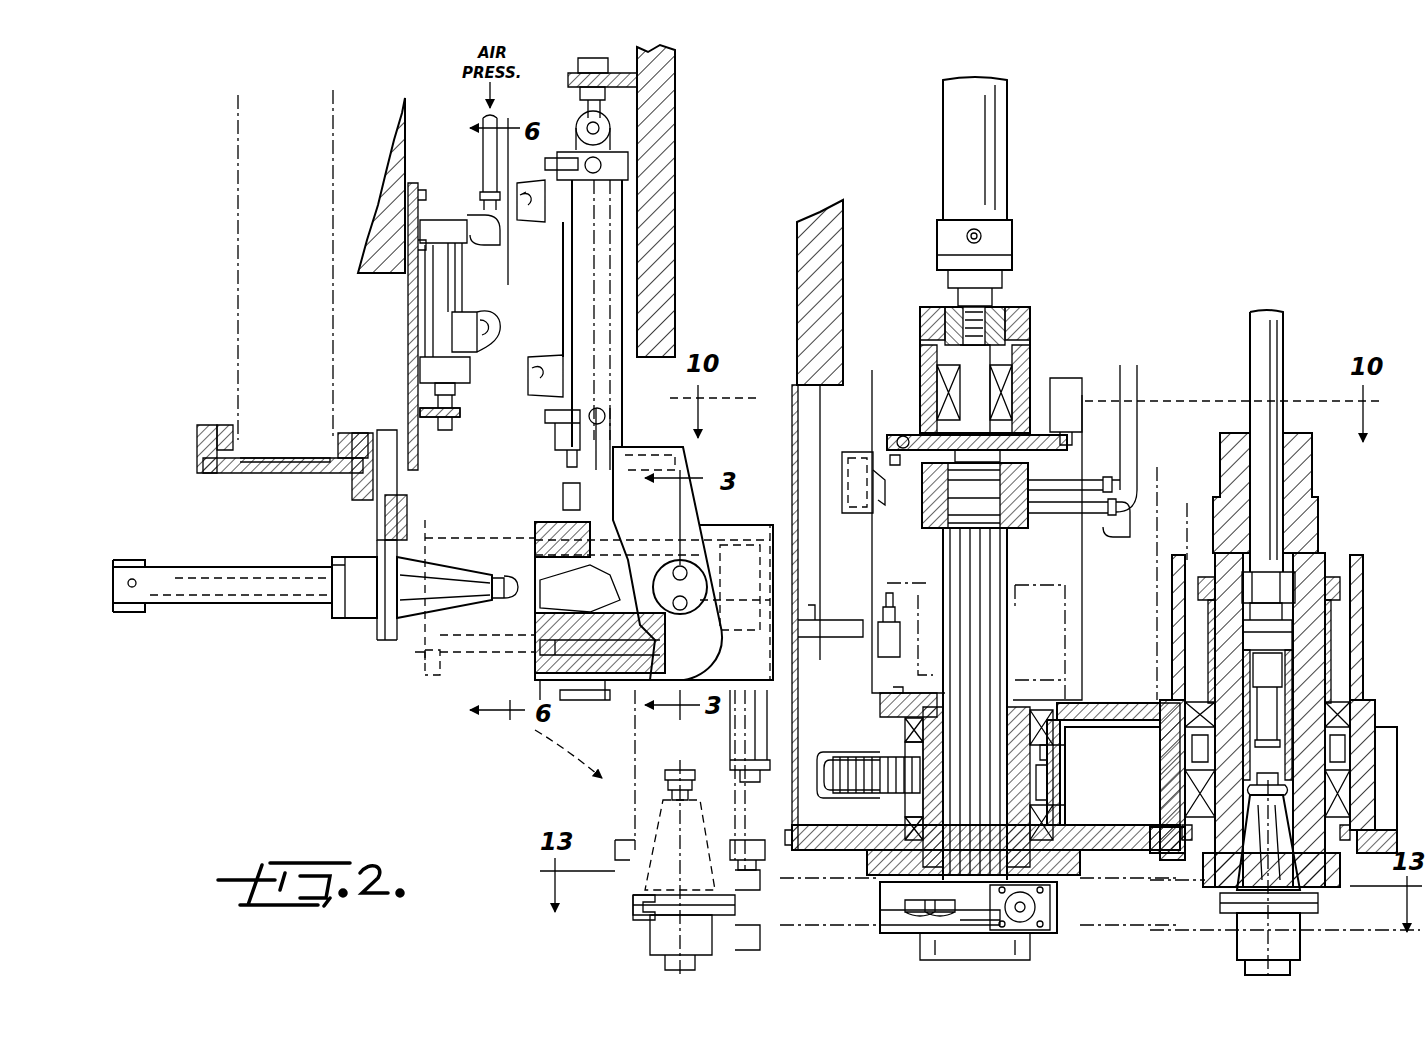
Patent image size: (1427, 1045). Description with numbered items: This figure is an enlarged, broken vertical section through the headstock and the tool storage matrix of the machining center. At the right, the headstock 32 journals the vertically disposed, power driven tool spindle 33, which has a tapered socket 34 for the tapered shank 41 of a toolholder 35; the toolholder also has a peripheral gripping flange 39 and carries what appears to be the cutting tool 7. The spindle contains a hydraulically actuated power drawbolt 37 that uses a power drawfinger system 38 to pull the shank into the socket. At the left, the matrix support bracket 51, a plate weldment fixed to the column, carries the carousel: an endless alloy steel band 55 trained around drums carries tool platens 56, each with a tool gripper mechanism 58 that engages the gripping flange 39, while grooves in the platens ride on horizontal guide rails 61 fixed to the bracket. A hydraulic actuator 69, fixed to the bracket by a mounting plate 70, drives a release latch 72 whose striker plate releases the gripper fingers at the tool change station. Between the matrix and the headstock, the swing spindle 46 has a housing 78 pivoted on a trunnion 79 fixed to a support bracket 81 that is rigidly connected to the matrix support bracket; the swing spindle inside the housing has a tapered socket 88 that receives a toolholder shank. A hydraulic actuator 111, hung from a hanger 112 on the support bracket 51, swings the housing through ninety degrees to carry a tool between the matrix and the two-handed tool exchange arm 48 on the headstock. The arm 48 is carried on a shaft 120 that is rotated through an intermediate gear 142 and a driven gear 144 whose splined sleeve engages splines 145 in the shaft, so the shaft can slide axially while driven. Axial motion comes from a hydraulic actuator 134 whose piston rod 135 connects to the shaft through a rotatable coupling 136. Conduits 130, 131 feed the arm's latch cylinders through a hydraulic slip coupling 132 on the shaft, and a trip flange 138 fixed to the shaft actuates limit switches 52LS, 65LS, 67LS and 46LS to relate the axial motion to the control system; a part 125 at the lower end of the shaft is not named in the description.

The tool 7 is at (212, 602).
The headstock 32 is at (1152, 850).
The tool spindle 33 is at (1312, 485).
The tapered socket 34 is at (1252, 903).
The toolholder 35 is at (352, 620).
The power drawbolt 37 is at (1293, 685).
The power drawfinger system 38 is at (1232, 690).
The gripping flange 39 is at (382, 628).
The tapered shank 41 is at (450, 568).
The swing spindle 46 is at (535, 525).
The tool exchange arm 48 is at (905, 925).
The matrix support bracket 51 is at (675, 180).
The alloy steel band 55 is at (272, 456).
The tool platens 56 is at (222, 476).
The tool gripper mechanism 58 is at (357, 535).
The horizontal guide rails 61 is at (226, 428).
The hydraulic actuator 69 is at (432, 310).
The mounting plate 70 is at (418, 343).
The release latch 72 is at (433, 443).
The swing spindle housing 78 is at (580, 712).
The trunnion 79 is at (665, 582).
The support bracket 81 is at (700, 512).
The tapered socket 88 is at (515, 558).
The hydraulic actuator 111 is at (625, 262).
The hanger 112 is at (600, 115).
The shaft 120 is at (945, 562).
The shaft end mount 125 is at (1020, 915).
The conduit 130 is at (1075, 492).
The conduit 131 is at (1060, 514).
The hydraulic slip coupling 132 is at (1030, 530).
The hydraulic actuator 134 is at (1015, 183).
The piston rod 135 is at (995, 300).
The rotatable coupling 136 is at (925, 355).
The trip flange 138 is at (1070, 442).
The intermediate gear 142 is at (860, 762).
The driven gear 144 is at (1040, 778).
The splines 145 is at (1035, 750).
The limit switch 46LS is at (880, 640).
The limit switch 52LS is at (1120, 401).
The limit switch 65LS is at (1062, 378).
The limit switch 67LS is at (855, 452).